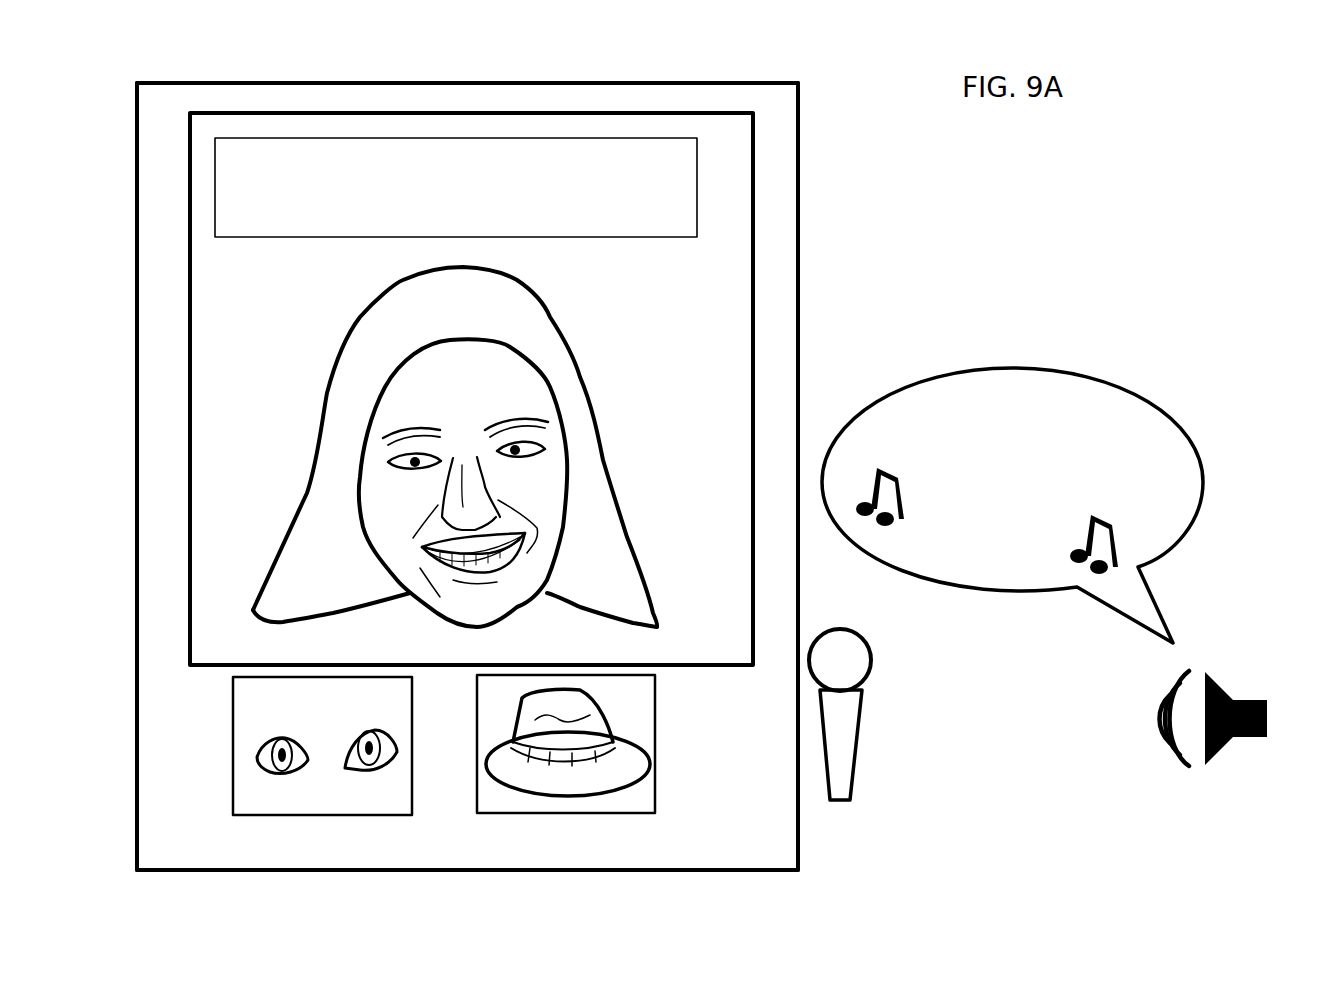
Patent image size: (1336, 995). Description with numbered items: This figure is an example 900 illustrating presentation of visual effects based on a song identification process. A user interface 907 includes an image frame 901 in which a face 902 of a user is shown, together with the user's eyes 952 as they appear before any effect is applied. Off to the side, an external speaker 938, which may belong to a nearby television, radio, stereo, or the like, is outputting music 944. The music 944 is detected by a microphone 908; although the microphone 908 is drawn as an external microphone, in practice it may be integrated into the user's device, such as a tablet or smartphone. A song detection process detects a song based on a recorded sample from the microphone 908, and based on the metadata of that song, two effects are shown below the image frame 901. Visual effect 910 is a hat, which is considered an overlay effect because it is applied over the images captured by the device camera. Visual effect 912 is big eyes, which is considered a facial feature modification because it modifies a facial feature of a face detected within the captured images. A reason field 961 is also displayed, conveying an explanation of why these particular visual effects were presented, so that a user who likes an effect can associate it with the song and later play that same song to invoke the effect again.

The example 900 is at (278, 62).
The user interface 907 is at (632, 82).
The image frame 901 is at (714, 327).
The reason field 961 is at (349, 238).
The face 902 is at (547, 310).
The eyes 952 is at (387, 467).
The visual effect 912 is at (237, 753).
The visual effect 910 is at (655, 740).
The microphone 908 is at (842, 741).
The music 944 is at (992, 367).
The external speaker 938 is at (1218, 757).